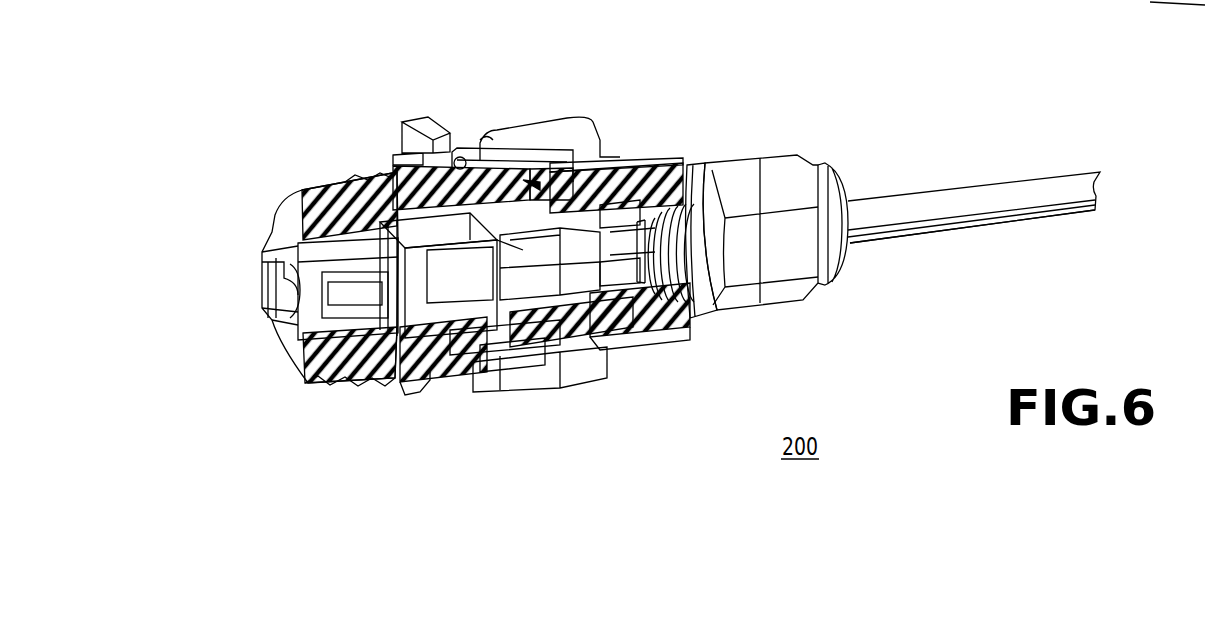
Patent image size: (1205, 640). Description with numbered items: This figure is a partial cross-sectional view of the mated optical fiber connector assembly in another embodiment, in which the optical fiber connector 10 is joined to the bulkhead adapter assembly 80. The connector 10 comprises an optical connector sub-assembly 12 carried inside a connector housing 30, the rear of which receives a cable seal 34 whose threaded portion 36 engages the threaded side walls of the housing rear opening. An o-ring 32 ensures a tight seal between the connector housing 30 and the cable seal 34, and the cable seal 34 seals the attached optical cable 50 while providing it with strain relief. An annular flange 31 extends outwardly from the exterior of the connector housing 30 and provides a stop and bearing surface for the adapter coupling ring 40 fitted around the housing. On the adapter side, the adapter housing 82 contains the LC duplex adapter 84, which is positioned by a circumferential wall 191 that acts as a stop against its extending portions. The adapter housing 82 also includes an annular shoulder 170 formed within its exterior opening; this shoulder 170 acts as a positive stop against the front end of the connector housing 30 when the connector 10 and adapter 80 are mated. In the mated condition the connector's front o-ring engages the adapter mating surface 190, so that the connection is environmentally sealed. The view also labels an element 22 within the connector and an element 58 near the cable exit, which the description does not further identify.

The optical fiber connector 10 is at (683, 345).
The optical connector sub-assembly 12 is at (580, 295).
The ferrule holder 22 is at (622, 330).
The connector housing 30 is at (650, 125).
The annular flange 31 is at (547, 135).
The o-ring 32 is at (702, 150).
The cable seal 34 is at (764, 150).
The threaded portion 36 is at (707, 300).
The adapter coupling ring 40 is at (528, 380).
The optical cable 50 is at (988, 200).
The cable boot 58 is at (1120, 7).
The bulkhead adapter assembly 80 is at (390, 122).
The adapter housing 82 is at (400, 160).
The LC duplex adapter 84 is at (417, 385).
The annular shoulder 170 is at (475, 170).
The adapter mating surface 190 is at (548, 350).
The circumferential wall 191 is at (380, 385).